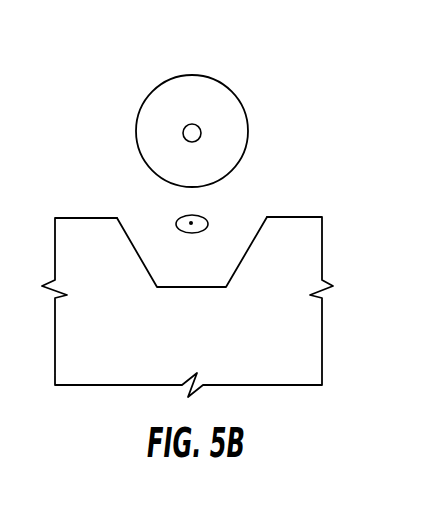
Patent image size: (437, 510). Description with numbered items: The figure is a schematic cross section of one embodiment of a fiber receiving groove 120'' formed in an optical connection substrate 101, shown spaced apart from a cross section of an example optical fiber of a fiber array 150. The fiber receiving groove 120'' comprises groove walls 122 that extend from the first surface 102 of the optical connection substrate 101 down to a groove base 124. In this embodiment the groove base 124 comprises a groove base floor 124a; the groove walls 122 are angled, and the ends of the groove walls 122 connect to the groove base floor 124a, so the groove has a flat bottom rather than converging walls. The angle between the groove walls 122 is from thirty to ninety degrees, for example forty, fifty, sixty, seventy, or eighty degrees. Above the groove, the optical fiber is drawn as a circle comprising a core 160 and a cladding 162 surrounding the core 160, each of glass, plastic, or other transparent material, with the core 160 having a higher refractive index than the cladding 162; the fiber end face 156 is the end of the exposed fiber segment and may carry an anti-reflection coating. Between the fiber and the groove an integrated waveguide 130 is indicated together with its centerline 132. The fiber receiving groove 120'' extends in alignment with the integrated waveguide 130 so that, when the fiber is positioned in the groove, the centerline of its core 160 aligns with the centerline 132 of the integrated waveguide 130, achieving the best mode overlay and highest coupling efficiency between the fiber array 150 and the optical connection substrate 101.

The optical connection substrate 101 is at (302, 205).
The first surface 102 is at (72, 217).
The fiber receiving groove 120'' is at (175, 333).
The groove walls 122 is at (132, 250).
The groove base 124 is at (173, 288).
The groove base floor 124a is at (197, 288).
The integrated waveguide 130 is at (190, 208).
The centerline of integrated waveguide 132 is at (186, 220).
The fiber array 150 is at (167, 102).
The fiber end face 156 is at (213, 117).
The core 160 is at (185, 139).
The cladding 162 is at (137, 115).